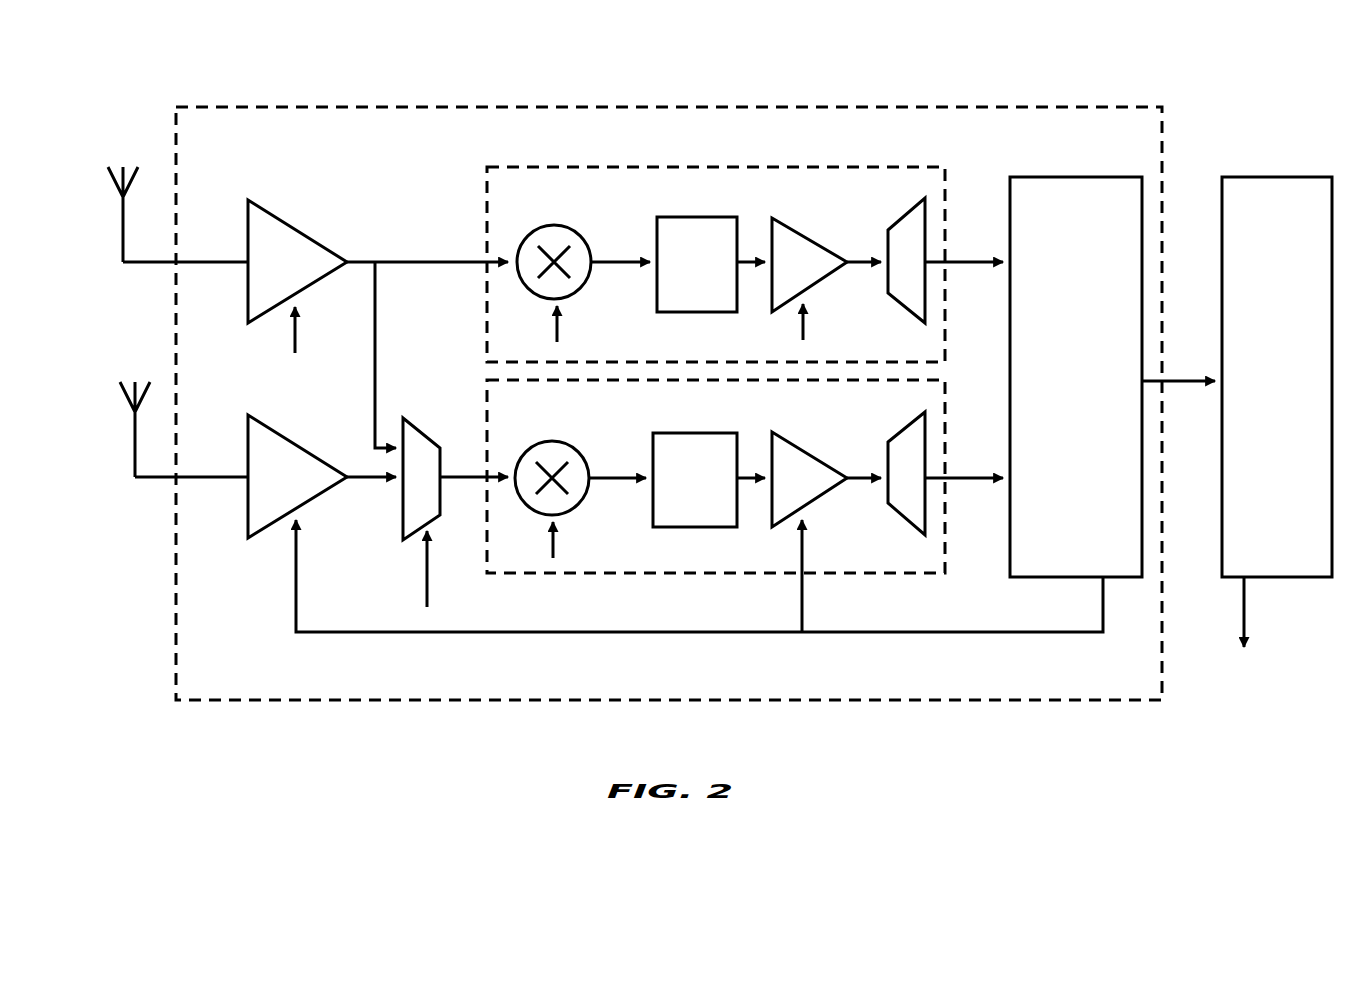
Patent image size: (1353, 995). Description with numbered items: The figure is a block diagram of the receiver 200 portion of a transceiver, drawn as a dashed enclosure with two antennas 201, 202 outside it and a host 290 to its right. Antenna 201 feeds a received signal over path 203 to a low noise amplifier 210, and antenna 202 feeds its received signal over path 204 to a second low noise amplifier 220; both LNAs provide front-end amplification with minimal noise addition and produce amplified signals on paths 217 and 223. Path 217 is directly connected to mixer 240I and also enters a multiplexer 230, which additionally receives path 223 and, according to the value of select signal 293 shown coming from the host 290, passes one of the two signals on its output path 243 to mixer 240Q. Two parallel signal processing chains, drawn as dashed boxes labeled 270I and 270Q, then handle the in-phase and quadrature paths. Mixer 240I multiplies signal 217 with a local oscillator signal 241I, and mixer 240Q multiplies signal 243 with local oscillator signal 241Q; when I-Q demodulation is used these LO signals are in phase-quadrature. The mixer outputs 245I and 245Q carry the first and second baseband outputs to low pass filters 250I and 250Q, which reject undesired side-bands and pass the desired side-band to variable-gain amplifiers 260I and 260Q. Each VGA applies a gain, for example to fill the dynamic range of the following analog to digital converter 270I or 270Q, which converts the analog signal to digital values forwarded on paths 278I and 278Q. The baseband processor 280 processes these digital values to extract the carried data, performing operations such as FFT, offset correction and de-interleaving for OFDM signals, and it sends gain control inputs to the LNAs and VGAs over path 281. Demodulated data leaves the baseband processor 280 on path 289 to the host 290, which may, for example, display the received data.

The receiver 200 is at (576, 100).
The antenna 201 is at (113, 184).
The antenna 202 is at (123, 399).
The path 203 is at (197, 260).
The path 204 is at (197, 475).
The low noise amplifier 210 is at (278, 212).
The path 217 is at (368, 262).
The low noise amplifier 220 is at (278, 427).
The path 223 is at (369, 485).
The multiplexer 230 is at (425, 406).
The path 243 is at (448, 473).
The mixer 240I is at (575, 226).
The mixer 240Q is at (572, 441).
The local oscillator signal 241I is at (559, 330).
The local oscillator signal 241Q is at (555, 546).
The output of mixer 245I is at (625, 267).
The output of mixer 245Q is at (625, 483).
The low pass filter 250I is at (711, 264).
The low pass filter 250Q is at (709, 480).
The variable-gain amplifier 260I is at (790, 228).
The variable-gain amplifier 260Q is at (790, 442).
The analog to digital converter / first signal processing chain 270I is at (907, 207).
The analog to digital converter / second signal processing chain 270Q is at (907, 421).
The path 278I is at (988, 267).
The path 278Q is at (988, 483).
The baseband processor 280 is at (1076, 377).
The path 281 is at (296, 332).
The path 289 is at (1197, 385).
The host 290 is at (1277, 377).
The select signal 293 is at (428, 597).